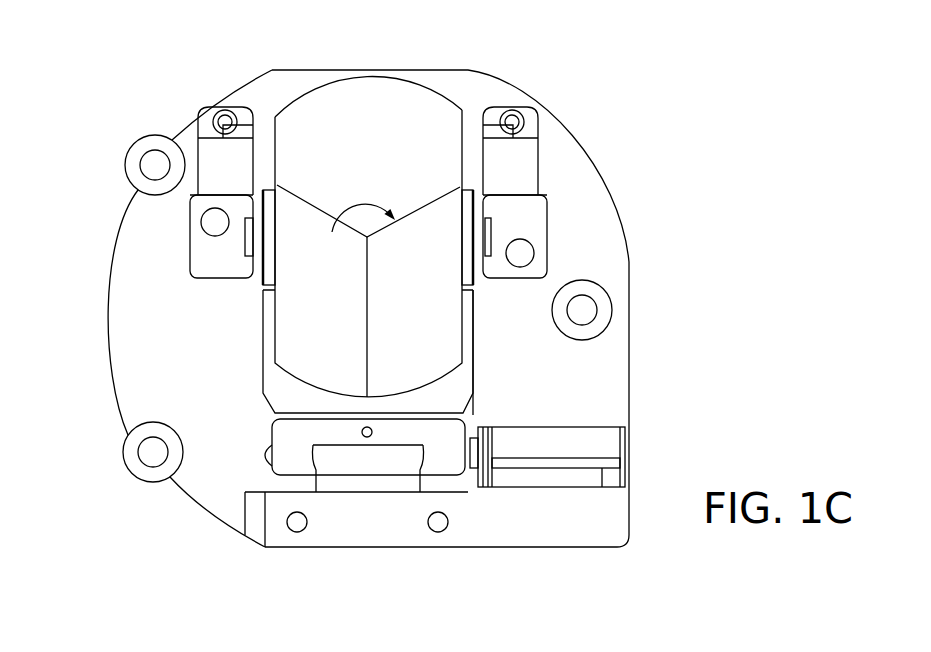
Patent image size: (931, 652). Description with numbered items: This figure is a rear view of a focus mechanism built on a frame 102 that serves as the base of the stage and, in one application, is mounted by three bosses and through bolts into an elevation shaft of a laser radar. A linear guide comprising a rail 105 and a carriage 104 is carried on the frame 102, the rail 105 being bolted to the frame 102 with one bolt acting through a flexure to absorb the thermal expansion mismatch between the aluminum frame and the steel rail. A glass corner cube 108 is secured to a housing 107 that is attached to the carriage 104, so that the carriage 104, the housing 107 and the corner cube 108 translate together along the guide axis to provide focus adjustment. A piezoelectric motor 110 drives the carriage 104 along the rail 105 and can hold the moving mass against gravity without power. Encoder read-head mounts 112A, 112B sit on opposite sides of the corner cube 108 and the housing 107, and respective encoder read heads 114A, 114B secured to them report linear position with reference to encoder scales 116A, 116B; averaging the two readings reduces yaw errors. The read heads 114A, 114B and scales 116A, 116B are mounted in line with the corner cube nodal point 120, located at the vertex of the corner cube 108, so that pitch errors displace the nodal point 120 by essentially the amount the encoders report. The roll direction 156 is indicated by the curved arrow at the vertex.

The frame 102 is at (629, 373).
The carriage 104 is at (445, 457).
The rail 105 is at (348, 475).
The housing 107 is at (272, 383).
The corner cube 108 is at (382, 107).
The piezoelectric motor 110 is at (605, 442).
The encoder read-head mount 112A is at (540, 160).
The encoder read-head mount 112B is at (212, 150).
The encoder read head 114A is at (537, 232).
The encoder read head 114B is at (190, 263).
The encoder scale 116A is at (468, 275).
The encoder scale 116B is at (258, 284).
The corner cube nodal point 120 is at (360, 238).
The roll direction 156 is at (332, 232).